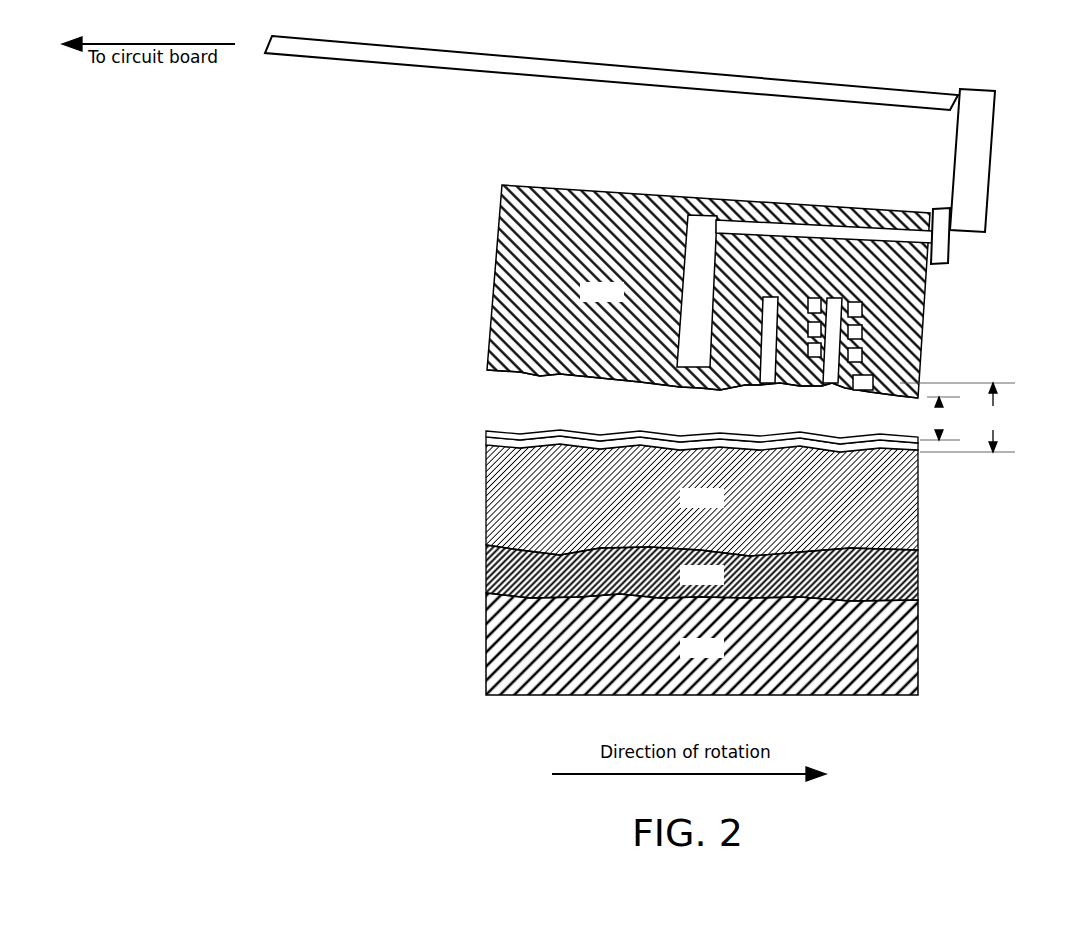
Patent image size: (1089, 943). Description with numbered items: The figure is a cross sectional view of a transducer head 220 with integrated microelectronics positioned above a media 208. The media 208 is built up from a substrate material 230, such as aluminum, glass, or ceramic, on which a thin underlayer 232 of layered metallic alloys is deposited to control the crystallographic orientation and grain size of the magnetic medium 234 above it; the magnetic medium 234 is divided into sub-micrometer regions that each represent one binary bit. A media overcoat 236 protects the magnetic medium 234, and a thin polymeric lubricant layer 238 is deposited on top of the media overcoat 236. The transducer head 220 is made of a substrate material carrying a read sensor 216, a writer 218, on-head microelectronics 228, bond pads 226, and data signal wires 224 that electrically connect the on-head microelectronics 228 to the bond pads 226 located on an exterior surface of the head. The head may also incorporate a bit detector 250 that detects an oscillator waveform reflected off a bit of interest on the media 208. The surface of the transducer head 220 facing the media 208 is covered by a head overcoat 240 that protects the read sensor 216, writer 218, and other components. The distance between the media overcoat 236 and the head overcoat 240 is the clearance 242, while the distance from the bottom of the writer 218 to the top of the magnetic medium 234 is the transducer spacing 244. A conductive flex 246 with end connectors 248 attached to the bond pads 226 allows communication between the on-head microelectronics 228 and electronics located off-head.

The media 208 is at (646, 587).
The read sensor 216 is at (757, 372).
The writer 218 is at (818, 376).
The transducer head 220 is at (708, 291).
The data signal wires 224 is at (798, 226).
The bond pads 226 is at (952, 255).
The on-head microelectronics 228 is at (706, 215).
The substrate material 230 is at (702, 644).
The underlayer 232 is at (702, 573).
The magnetic medium 234 is at (702, 500).
The media overcoat 236 is at (486, 444).
The lubricant layer 238 is at (486, 437).
The head overcoat 240 is at (487, 374).
The clearance 242 is at (940, 418).
The transducer spacing 244 is at (994, 417).
The conductive flex 246 is at (824, 84).
The end connectors 248 is at (990, 164).
The bit detector 250 is at (877, 380).